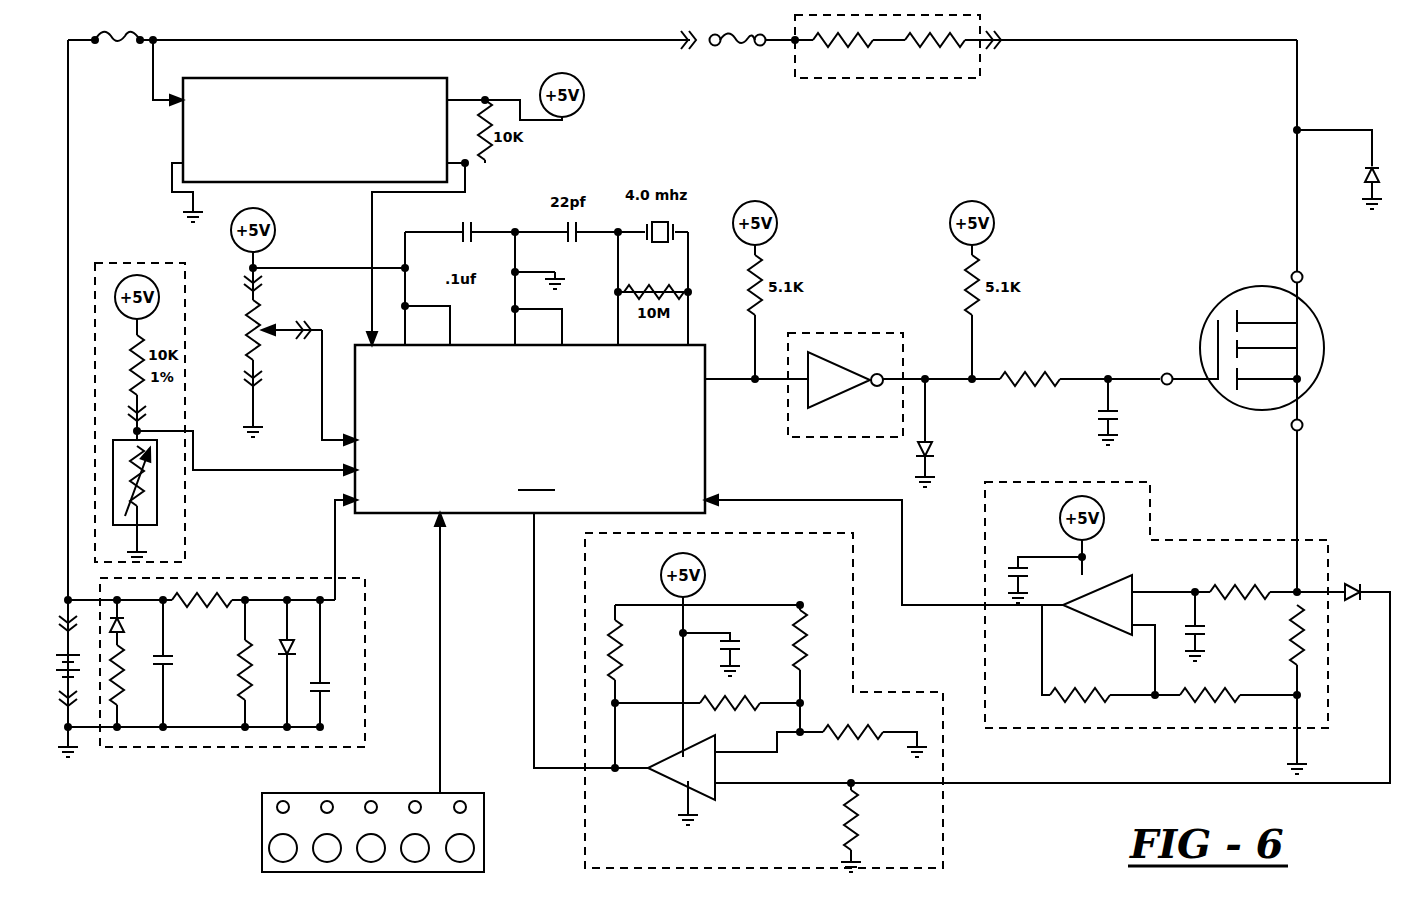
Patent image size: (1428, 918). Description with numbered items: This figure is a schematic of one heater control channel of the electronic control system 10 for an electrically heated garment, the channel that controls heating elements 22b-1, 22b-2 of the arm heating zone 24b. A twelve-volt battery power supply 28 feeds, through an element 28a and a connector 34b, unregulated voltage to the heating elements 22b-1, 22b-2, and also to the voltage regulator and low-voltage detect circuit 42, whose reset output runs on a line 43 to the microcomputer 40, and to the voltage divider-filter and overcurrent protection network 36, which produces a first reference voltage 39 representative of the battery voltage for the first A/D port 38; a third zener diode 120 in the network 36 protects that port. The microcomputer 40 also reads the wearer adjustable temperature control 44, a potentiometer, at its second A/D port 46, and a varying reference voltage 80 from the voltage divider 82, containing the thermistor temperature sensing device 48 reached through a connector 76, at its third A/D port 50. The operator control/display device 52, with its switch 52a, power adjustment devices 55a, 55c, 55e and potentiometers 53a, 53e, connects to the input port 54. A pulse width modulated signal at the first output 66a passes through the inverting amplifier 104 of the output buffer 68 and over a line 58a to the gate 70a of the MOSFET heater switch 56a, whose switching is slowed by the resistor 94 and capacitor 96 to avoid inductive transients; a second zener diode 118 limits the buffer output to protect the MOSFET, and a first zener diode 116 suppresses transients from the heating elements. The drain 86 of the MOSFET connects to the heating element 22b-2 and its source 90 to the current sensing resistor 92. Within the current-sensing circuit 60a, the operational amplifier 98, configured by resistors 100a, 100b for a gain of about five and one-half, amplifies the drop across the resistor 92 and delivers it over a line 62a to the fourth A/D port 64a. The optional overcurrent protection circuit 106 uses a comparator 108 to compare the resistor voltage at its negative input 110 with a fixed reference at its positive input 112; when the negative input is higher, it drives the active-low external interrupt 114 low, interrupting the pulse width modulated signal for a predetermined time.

The electronic control system 10 is at (1330, 95).
The power supply 28 is at (100, 662).
The fuse 28a is at (118, 44).
The heating element 22b-1 is at (795, 46).
The heating element 22b-2 is at (958, 40).
The heating zone 24b is at (925, 78).
The connector 34b is at (694, 50).
The voltage divider network 36 is at (215, 678).
The first A/D port 38 is at (350, 498).
The first reference voltage 39 is at (272, 598).
The microcomputer 40 is at (508, 514).
The voltage regulator and low-voltage detect circuit 42 is at (435, 78).
The reset line 43 is at (370, 340).
The wearer adjustable temperature control 44 is at (259, 330).
The second A/D port 46 is at (357, 432).
The temperature sensing device 48 is at (152, 517).
The third A/D port 50 is at (355, 470).
The operator control/display device 52 is at (358, 810).
The switch 52a is at (392, 805).
The connector socket 53a is at (280, 845).
The connector socket 53e is at (475, 846).
The input port 54 is at (443, 517).
The power adjustment device 55a is at (283, 807).
The power adjustment device 55c is at (371, 807).
The power adjustment device 55e is at (460, 807).
The MOSFET heater switch 56a is at (1295, 354).
The drive line 58a is at (948, 380).
The current-sensing circuit 60a is at (1052, 632).
The comparator output line 62a is at (830, 500).
The fourth A/D port 64a is at (715, 497).
The first output 66a is at (712, 385).
The output buffer 68 is at (845, 369).
The gate 70a is at (1172, 368).
The connector 76 is at (147, 417).
The varying reference voltage 80 is at (193, 440).
The voltage divider 82 is at (142, 263).
The drain 86 is at (1300, 300).
The source 90 is at (1300, 402).
The current sensing resistor 92 is at (1300, 652).
The resistor 94 is at (1052, 376).
The capacitor 96 is at (1100, 413).
The operational amplifier 98 is at (1118, 580).
The resistor 100a is at (1100, 665).
The resistor 100b is at (1226, 697).
The inverting amplifier 104 is at (828, 370).
The overcurrent protection circuit 106 is at (802, 702).
The comparator 108 is at (680, 775).
The negative input 110 is at (718, 790).
The positive input 112 is at (723, 752).
The external interrupt 114 is at (536, 520).
The first zener diode 116 is at (1380, 176).
The second zener diode 118 is at (935, 456).
The third zener diode 120 is at (273, 663).